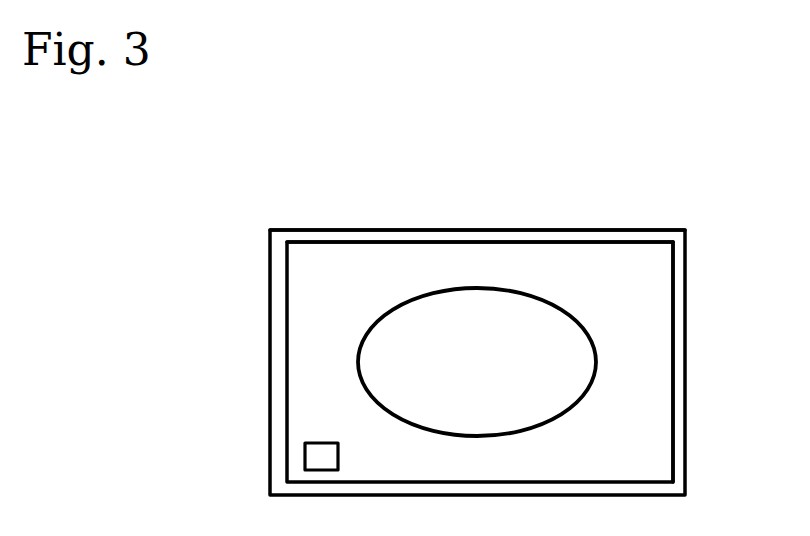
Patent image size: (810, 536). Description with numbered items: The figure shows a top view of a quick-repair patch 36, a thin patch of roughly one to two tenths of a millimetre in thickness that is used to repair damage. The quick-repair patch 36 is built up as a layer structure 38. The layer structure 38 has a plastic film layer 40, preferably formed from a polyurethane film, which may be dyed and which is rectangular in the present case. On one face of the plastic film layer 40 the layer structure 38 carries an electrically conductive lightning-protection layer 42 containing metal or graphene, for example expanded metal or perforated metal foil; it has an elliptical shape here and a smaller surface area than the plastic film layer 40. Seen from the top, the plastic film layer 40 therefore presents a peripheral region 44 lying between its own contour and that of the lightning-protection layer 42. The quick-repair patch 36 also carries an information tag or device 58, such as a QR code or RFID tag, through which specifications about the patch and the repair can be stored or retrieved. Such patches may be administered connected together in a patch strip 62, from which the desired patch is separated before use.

The quick-repair patch 36 is at (363, 242).
The layer structure 38 is at (497, 185).
The plastic film layer 40 is at (556, 240).
The lightning-protection layer 42 is at (568, 312).
The peripheral region 44 is at (645, 415).
The information tag or device 58 is at (327, 443).
The patch strip 62 is at (270, 264).